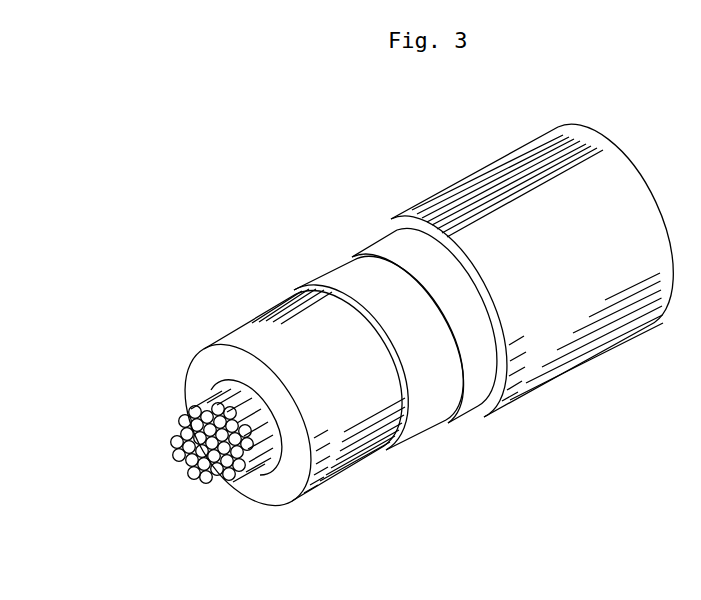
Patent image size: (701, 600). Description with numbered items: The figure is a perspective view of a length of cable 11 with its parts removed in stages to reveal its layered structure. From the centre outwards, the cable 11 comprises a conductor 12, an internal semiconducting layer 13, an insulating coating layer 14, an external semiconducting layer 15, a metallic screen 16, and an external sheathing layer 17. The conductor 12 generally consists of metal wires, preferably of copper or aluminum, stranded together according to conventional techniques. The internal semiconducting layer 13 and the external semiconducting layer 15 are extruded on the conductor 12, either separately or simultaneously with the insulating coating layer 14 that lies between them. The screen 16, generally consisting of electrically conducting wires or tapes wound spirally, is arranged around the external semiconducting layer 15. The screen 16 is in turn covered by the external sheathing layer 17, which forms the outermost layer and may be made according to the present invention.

The cable 11 is at (423, 200).
The conductor 12 is at (177, 422).
The internal semiconducting layer 13 is at (240, 466).
The insulating coating layer 14 is at (253, 328).
The external semiconducting layer 15 is at (332, 272).
The metallic screen 16 is at (480, 410).
The external sheathing layer 17 is at (590, 362).